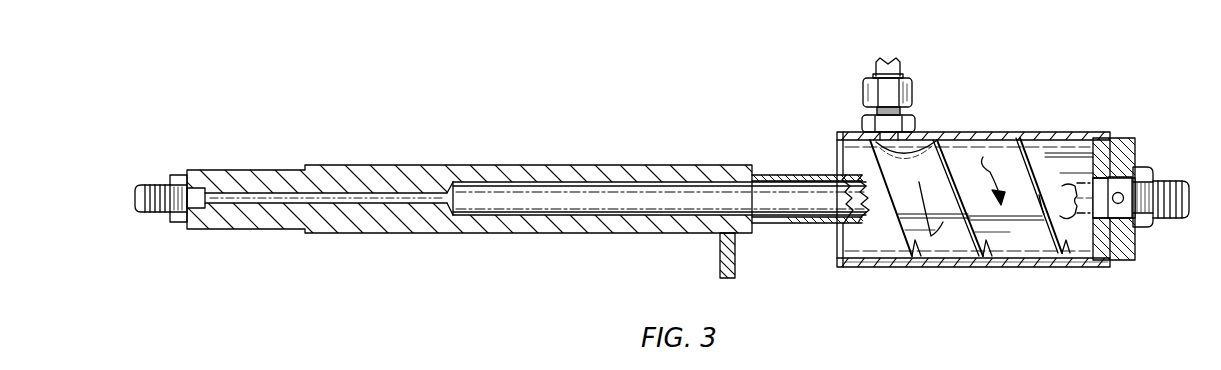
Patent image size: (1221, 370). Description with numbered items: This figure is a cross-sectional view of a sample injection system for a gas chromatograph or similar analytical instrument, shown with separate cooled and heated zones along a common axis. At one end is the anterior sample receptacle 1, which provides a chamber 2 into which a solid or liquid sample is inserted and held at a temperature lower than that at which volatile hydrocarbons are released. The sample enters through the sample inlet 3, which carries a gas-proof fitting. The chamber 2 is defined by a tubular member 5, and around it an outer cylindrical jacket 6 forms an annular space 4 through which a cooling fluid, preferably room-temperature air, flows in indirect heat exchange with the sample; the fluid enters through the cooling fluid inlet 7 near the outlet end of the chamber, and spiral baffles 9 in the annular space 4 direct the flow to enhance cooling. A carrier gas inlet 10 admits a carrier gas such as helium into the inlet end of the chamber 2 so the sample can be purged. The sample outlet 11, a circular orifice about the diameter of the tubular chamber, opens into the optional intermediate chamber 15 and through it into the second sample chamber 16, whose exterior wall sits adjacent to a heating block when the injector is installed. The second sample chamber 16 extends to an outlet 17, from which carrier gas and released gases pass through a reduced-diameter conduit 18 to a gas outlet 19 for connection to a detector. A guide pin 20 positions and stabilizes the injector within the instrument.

The anterior sample receptacle 1 is at (993, 90).
The chamber 2 is at (848, 204).
The sample inlet 3 is at (1190, 184).
The annular space 4 is at (1063, 155).
The tubular member 5 is at (1068, 180).
The outer cylindrical jacket 6 is at (1068, 266).
The cooling fluid inlet 7 is at (898, 110).
The spiral baffles 9 is at (972, 238).
The carrier gas inlet 10 is at (1137, 223).
The sample outlet 11 is at (835, 165).
The intermediate chamber 15 is at (763, 197).
The second sample chamber 16 is at (607, 194).
The outlet 17 is at (446, 192).
The conduit 18 is at (310, 197).
The gas outlet 19 is at (137, 197).
The guide pin 20 is at (736, 262).